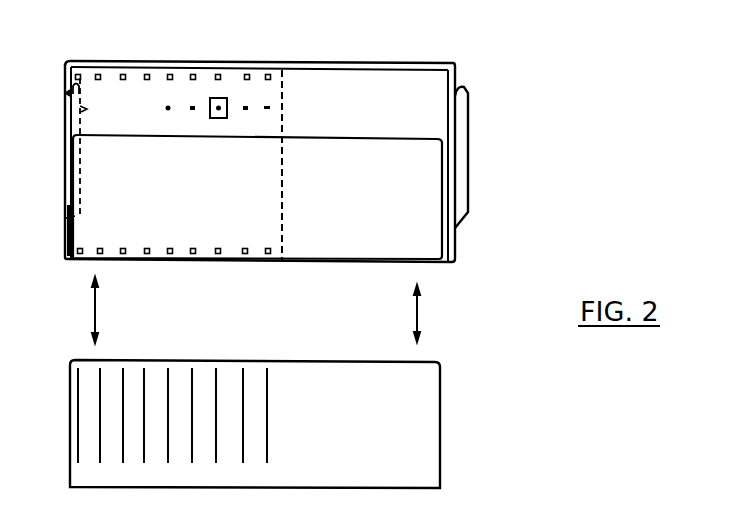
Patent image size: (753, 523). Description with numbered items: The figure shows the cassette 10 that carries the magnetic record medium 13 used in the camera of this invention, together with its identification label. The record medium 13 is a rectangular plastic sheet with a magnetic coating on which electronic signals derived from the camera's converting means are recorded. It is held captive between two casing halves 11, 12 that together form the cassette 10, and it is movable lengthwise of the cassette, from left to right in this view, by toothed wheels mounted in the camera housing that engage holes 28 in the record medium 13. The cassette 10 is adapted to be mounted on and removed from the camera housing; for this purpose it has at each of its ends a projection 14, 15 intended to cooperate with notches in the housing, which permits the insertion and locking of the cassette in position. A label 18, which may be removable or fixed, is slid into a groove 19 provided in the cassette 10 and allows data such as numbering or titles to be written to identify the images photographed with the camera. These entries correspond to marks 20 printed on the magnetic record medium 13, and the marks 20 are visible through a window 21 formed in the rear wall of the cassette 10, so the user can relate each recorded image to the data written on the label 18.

The cassette 10 is at (478, 188).
The casing half 11 is at (323, 85).
The casing half 12 is at (372, 36).
The record medium 13 is at (125, 107).
The projection 14 is at (78, 110).
The projection 15 is at (462, 128).
The label 18 is at (428, 440).
The groove 19 is at (75, 228).
The marks 20 is at (168, 112).
The window 21 is at (219, 118).
The holes 28 is at (218, 73).